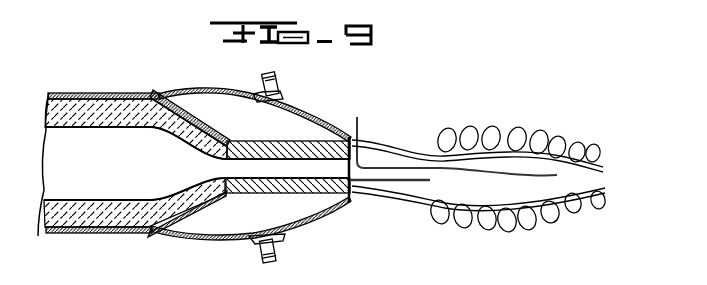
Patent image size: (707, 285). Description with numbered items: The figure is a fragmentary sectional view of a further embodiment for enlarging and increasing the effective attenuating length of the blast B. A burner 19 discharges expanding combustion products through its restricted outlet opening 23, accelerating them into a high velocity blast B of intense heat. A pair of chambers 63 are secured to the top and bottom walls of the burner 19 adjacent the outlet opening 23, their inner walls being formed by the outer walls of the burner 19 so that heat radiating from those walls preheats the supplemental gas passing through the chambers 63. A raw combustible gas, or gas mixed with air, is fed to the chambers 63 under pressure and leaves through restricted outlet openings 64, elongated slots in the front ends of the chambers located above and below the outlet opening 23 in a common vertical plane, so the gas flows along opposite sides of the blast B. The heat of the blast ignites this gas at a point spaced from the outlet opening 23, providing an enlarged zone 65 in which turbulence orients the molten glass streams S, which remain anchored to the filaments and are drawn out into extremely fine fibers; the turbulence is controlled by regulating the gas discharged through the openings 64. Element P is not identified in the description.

The burner 19 is at (107, 92).
The chambers 63 is at (208, 96).
The restricted outlet opening 23 is at (237, 167).
The restricted outlet openings 64 is at (355, 142).
The plate P is at (356, 121).
The blast B is at (383, 163).
The streams S is at (418, 176).
The enlarged zone 65 is at (515, 128).